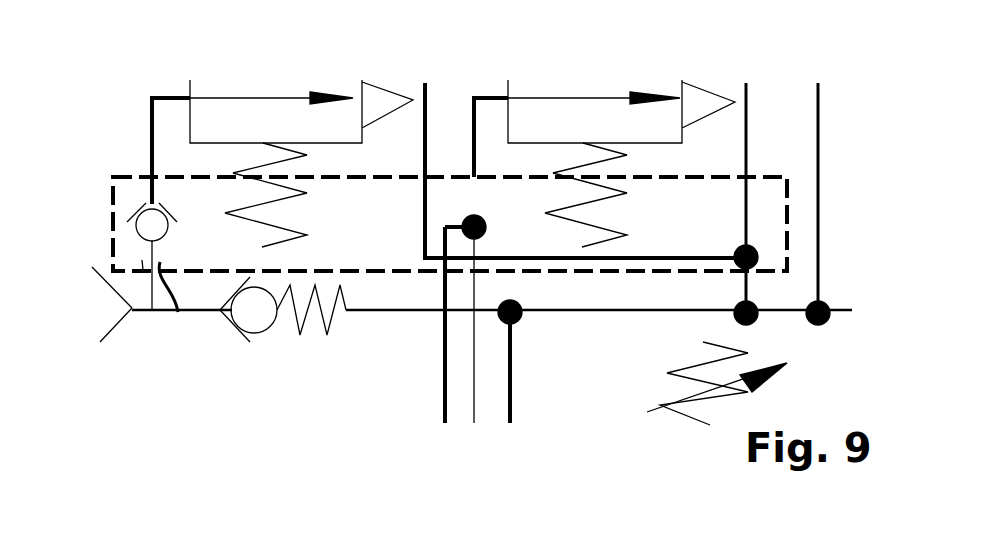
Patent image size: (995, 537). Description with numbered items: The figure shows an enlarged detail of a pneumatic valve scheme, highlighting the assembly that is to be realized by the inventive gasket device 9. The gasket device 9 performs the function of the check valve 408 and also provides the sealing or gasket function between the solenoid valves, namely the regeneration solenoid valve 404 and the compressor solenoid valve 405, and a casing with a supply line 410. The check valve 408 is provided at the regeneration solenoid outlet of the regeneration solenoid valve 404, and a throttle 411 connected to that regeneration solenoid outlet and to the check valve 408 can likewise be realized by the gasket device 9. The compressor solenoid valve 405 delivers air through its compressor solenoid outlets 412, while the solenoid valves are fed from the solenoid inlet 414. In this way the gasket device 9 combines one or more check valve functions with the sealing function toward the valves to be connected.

The gasket device 9 is at (787, 210).
The regeneration solenoid valve 404 is at (205, 82).
The compressor solenoid valve 405 is at (675, 87).
The check valve 408 is at (142, 203).
The supply line 410 is at (395, 312).
The throttle 411 is at (178, 312).
The compressor solenoid outlets 412 is at (466, 222).
The solenoid inlet 414 is at (423, 90).